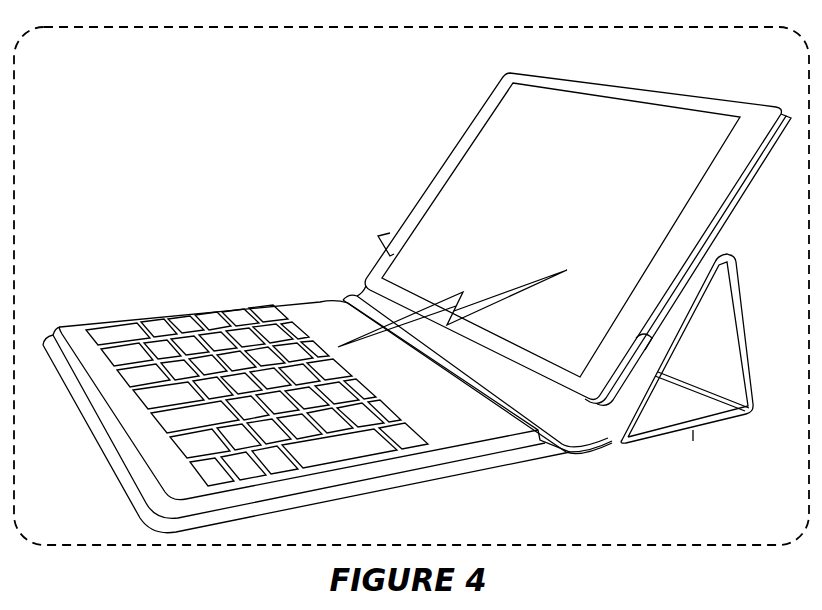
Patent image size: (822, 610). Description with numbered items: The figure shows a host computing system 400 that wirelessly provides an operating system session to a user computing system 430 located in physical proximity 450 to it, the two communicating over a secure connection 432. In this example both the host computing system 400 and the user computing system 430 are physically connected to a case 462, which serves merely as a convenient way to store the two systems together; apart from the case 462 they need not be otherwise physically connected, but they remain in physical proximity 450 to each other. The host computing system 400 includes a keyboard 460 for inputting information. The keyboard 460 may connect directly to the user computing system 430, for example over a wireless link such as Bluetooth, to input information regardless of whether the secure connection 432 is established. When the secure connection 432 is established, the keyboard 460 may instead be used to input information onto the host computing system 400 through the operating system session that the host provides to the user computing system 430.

The host computing system 400 is at (297, 302).
The user computing system 430 is at (422, 193).
The secure connection 432 is at (540, 283).
The physical proximity 450 is at (411, 57).
The keyboard 460 is at (152, 330).
The case 462 is at (690, 427).